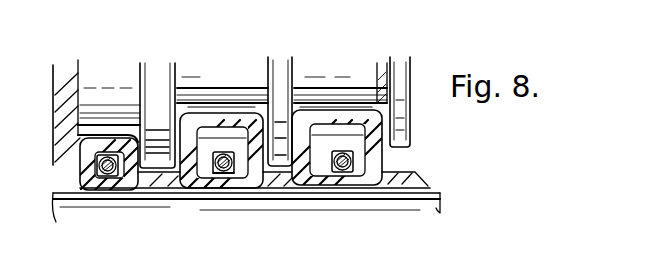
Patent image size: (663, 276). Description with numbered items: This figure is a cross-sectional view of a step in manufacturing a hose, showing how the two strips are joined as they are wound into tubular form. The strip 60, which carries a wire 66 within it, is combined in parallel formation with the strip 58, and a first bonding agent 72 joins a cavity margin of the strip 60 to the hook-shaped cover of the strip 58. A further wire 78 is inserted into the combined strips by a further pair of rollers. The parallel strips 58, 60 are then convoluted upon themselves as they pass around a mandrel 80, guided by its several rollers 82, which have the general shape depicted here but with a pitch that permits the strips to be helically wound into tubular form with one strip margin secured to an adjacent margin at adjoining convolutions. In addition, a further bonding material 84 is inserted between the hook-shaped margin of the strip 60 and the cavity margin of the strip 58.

The strip 58 is at (336, 118).
The strip 60 is at (213, 118).
The wire 66 is at (82, 165).
The first bonding agent 72 is at (147, 135).
The wire 78 is at (226, 173).
The mandrel 80 is at (442, 201).
The rollers 82 is at (404, 63).
The further bonding material 84 is at (272, 117).